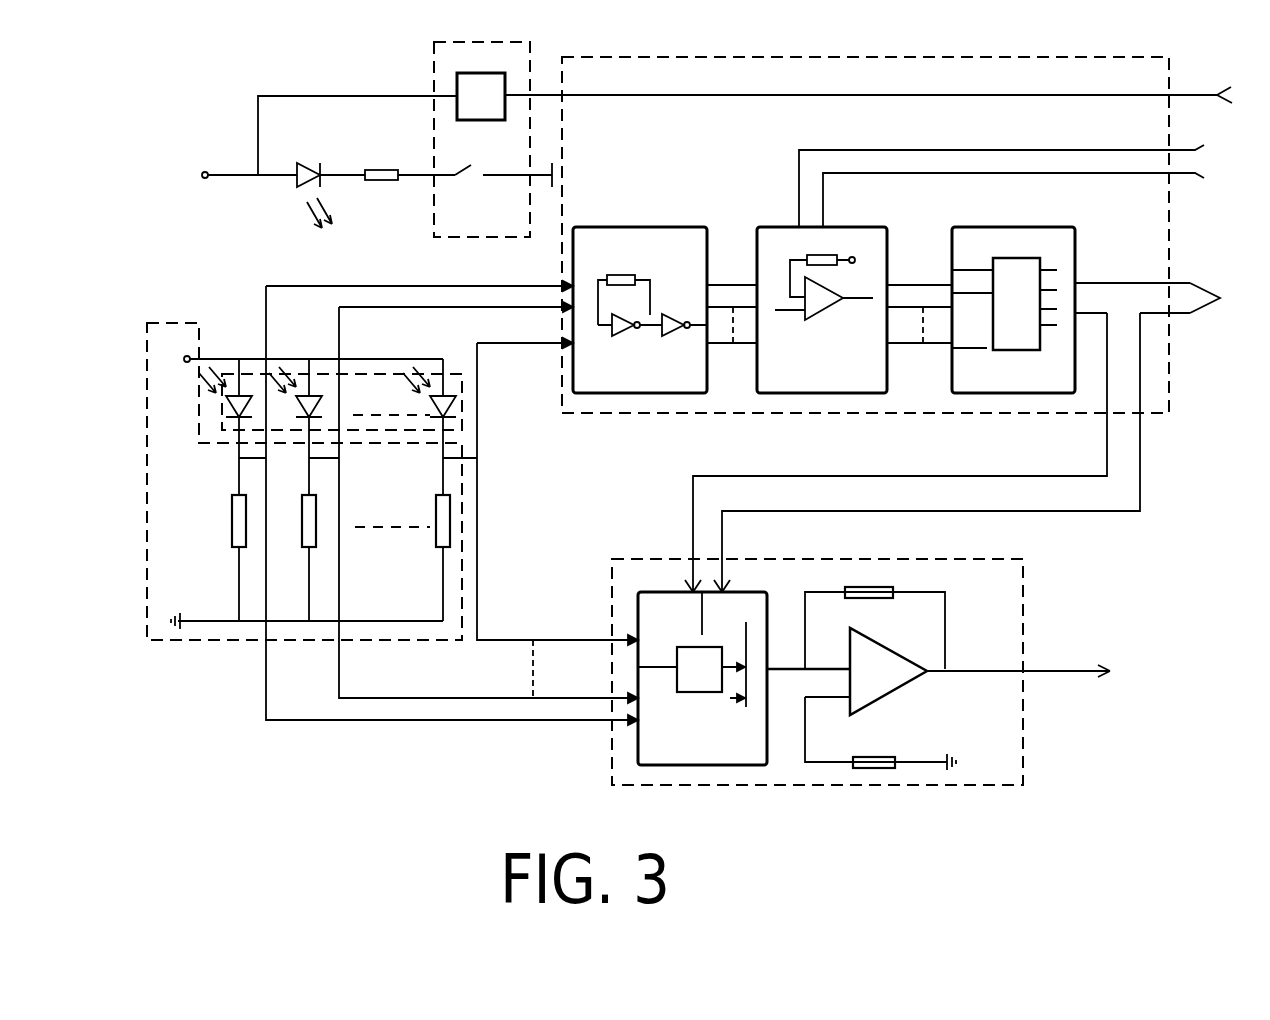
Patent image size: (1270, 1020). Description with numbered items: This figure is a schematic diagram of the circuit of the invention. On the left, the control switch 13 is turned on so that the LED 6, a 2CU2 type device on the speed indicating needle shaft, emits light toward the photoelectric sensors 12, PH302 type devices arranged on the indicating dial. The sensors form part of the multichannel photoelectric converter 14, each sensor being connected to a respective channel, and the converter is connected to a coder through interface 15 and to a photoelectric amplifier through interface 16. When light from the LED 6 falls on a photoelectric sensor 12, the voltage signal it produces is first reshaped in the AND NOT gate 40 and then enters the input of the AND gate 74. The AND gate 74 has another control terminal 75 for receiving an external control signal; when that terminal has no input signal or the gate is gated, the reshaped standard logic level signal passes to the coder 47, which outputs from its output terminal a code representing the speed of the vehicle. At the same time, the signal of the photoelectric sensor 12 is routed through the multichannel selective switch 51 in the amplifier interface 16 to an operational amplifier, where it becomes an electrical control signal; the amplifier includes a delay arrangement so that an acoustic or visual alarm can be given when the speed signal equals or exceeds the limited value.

The LED 6 is at (303, 168).
The photoelectric sensor 12 is at (447, 404).
The control switch 13 is at (487, 42).
The multichannel photoelectric converter 14 is at (207, 640).
The coder interface 15 is at (944, 57).
The photoelectric amplifier interface 16 is at (910, 786).
The AND NOT gate 40 is at (646, 262).
The coder 47 is at (1034, 383).
The multichannel selective switch 51 is at (703, 744).
The AND gate 74 is at (830, 374).
The control terminal 75 is at (822, 260).